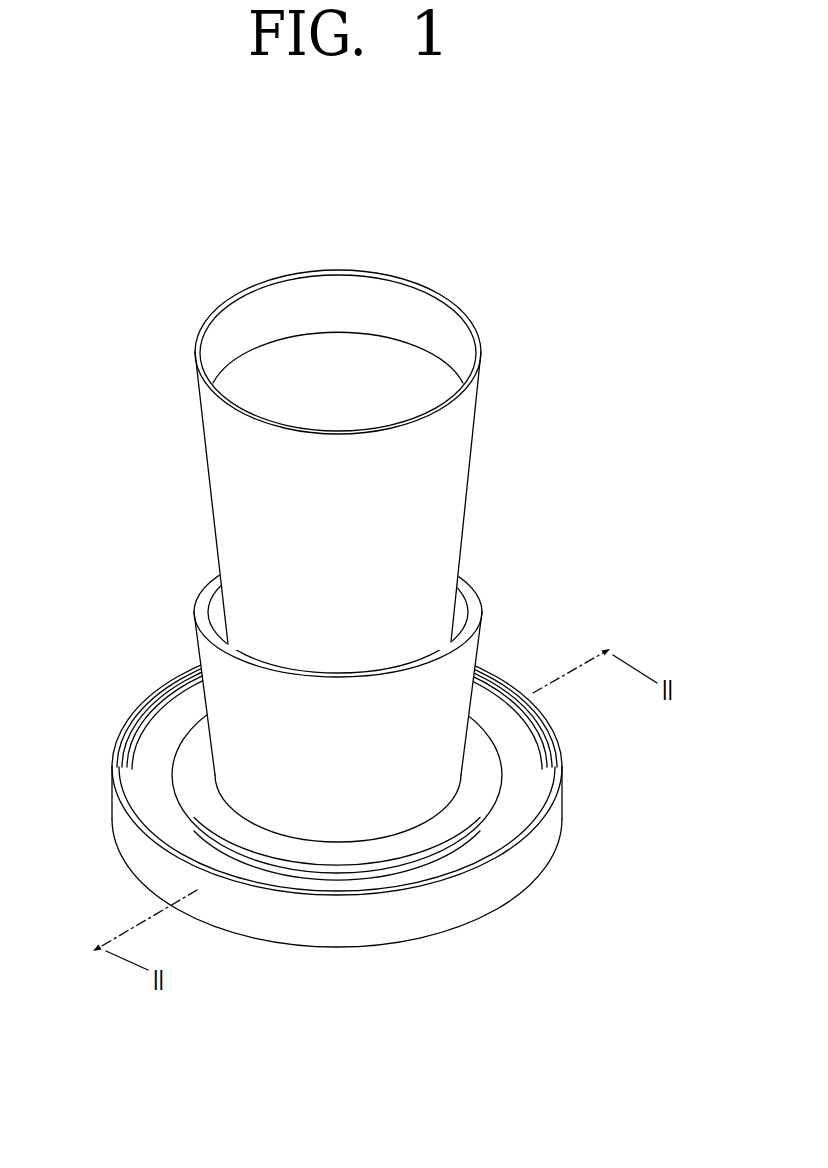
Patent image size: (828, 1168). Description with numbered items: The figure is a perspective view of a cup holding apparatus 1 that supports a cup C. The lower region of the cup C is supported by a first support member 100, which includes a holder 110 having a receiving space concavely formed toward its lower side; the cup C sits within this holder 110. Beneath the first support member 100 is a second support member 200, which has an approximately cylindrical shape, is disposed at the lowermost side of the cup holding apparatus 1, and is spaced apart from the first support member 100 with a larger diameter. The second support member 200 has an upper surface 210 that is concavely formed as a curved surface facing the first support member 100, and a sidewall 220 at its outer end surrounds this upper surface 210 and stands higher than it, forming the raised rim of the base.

The cup holding apparatus 1 is at (352, 177).
The cup C is at (466, 436).
The first support member 100 is at (340, 694).
The holder 110 is at (473, 637).
The second support member 200 is at (528, 868).
The upper surface 210 is at (143, 758).
The sidewall 220 is at (555, 800).